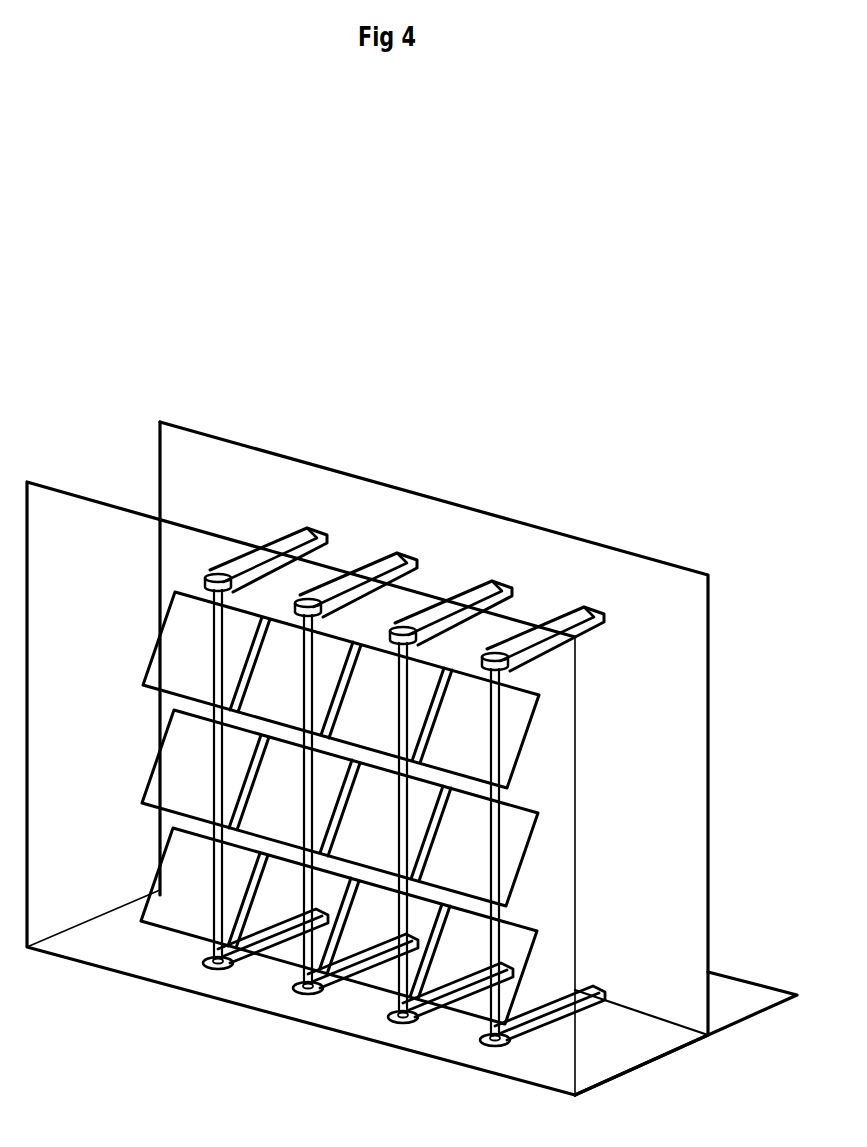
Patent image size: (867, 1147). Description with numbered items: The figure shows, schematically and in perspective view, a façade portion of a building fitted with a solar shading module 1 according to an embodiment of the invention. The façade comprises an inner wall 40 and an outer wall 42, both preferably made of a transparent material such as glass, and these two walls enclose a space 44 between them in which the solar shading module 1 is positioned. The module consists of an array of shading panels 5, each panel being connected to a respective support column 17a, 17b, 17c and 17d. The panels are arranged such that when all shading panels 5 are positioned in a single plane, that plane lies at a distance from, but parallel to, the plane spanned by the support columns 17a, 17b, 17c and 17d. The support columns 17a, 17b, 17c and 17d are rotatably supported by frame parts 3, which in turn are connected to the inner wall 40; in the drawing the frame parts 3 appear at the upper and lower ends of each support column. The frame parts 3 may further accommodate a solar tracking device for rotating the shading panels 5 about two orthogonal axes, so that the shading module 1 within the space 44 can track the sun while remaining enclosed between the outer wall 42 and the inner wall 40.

The solar shading module 1 is at (336, 493).
The frame parts 3 is at (300, 535).
The shading panels 5 is at (150, 655).
The support column 17a is at (243, 640).
The support column 17b is at (325, 648).
The support column 17c is at (430, 697).
The support column 17d is at (540, 743).
The inner wall 40 is at (692, 777).
The outer wall 42 is at (58, 513).
The space 44 is at (132, 462).